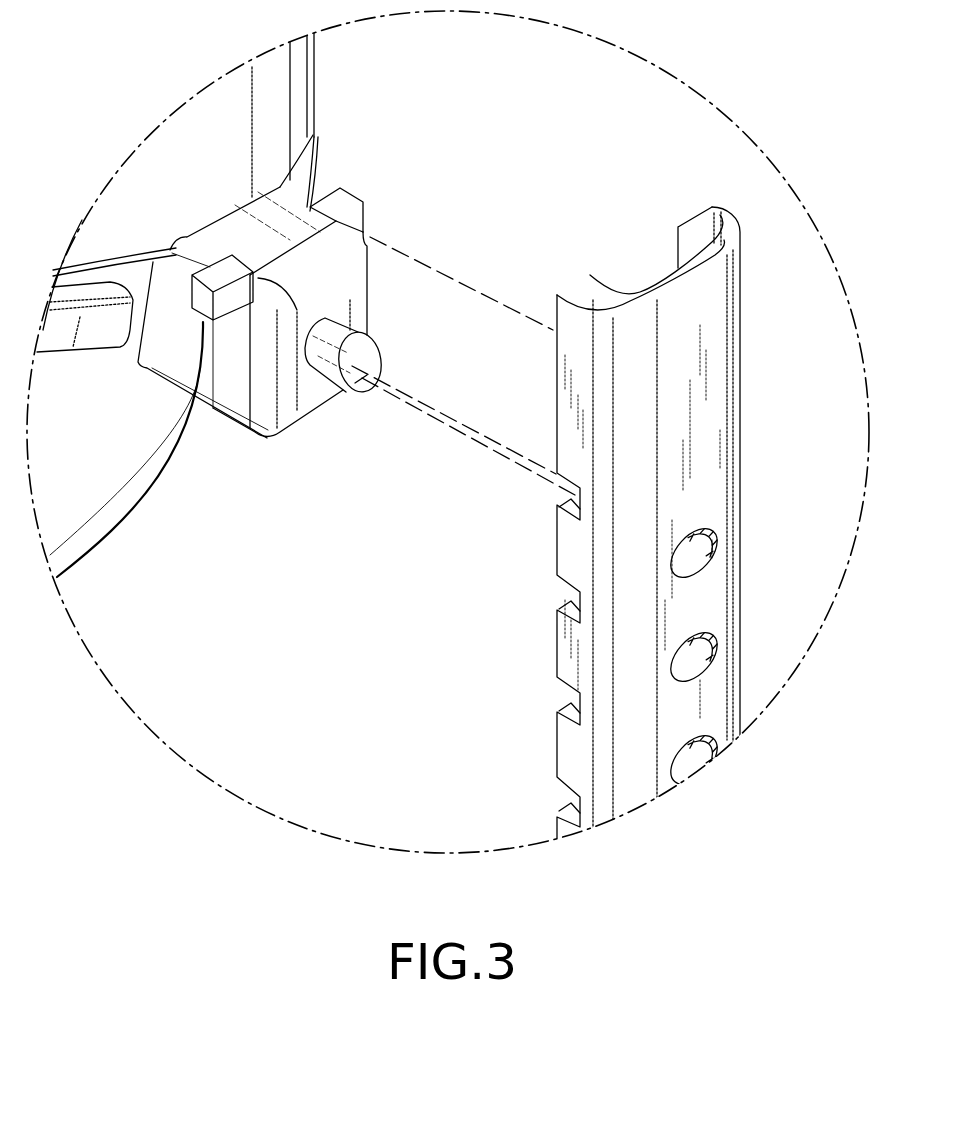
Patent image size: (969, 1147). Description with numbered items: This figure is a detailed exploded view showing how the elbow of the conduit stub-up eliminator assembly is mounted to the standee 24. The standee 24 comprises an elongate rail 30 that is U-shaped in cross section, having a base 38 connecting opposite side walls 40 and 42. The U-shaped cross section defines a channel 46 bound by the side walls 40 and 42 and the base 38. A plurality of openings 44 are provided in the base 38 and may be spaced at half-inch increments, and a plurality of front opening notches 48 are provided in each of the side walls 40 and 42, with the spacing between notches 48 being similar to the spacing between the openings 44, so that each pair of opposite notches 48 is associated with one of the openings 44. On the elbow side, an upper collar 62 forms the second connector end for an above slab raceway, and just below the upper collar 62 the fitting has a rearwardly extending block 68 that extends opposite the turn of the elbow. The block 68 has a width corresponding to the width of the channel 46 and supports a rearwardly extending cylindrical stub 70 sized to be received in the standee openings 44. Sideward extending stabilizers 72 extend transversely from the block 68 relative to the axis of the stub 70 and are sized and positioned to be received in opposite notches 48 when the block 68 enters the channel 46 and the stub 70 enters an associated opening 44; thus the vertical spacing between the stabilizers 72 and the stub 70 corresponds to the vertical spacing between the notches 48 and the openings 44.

The standee 24 is at (658, 506).
The elongate rail 30 is at (645, 506).
The base 38 is at (702, 446).
The side wall 40 is at (550, 541).
The side wall 42 is at (695, 235).
The openings 44 is at (714, 657).
The channel 46 is at (646, 268).
The front opening notches 48 is at (578, 503).
The upper collar 62 is at (298, 93).
The rearwardly extending block 68 is at (370, 338).
The stub 70 is at (364, 343).
The stabilizers 72 is at (350, 203).